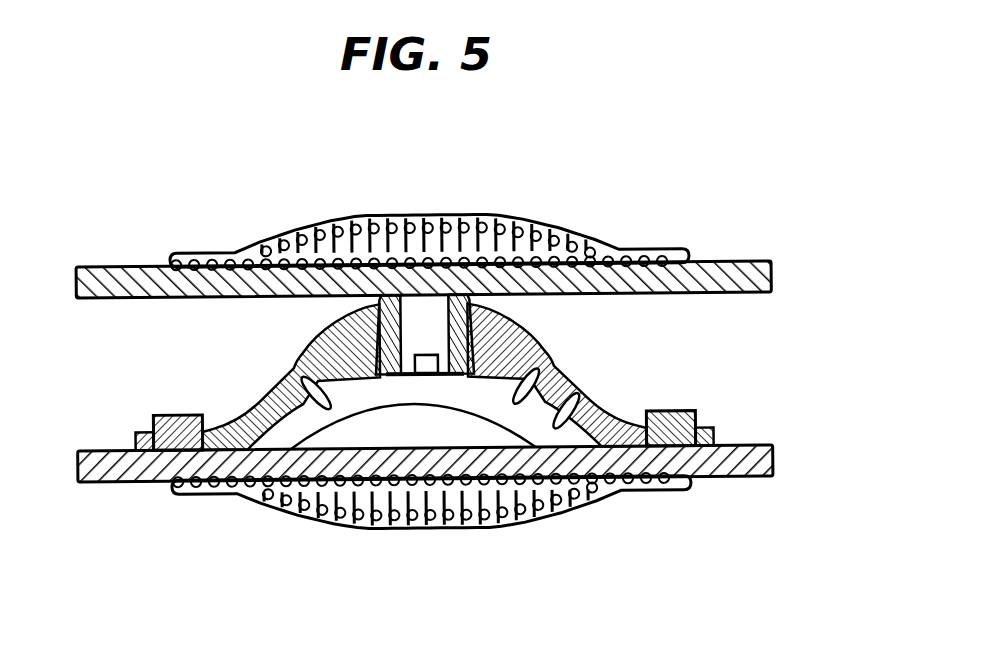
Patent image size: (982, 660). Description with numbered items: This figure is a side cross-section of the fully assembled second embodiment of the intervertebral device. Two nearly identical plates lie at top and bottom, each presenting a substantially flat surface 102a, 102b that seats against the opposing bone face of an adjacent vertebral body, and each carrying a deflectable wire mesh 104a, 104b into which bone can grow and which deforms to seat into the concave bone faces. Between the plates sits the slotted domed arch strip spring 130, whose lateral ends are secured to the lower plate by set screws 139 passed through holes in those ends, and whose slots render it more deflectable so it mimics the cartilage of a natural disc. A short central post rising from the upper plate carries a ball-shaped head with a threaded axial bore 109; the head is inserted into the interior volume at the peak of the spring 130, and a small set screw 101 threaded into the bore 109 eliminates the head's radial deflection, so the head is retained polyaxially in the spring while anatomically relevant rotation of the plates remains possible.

The set screw 101 is at (406, 363).
The flat surface portion 102a is at (745, 479).
The flat exterior surface 102b is at (760, 262).
The wire mesh 104a is at (517, 527).
The wire mesh 104b is at (478, 212).
The threaded axial bore 109 is at (404, 320).
The slotted domed arch strip spring 130 is at (520, 333).
The set screws 139 is at (155, 415).